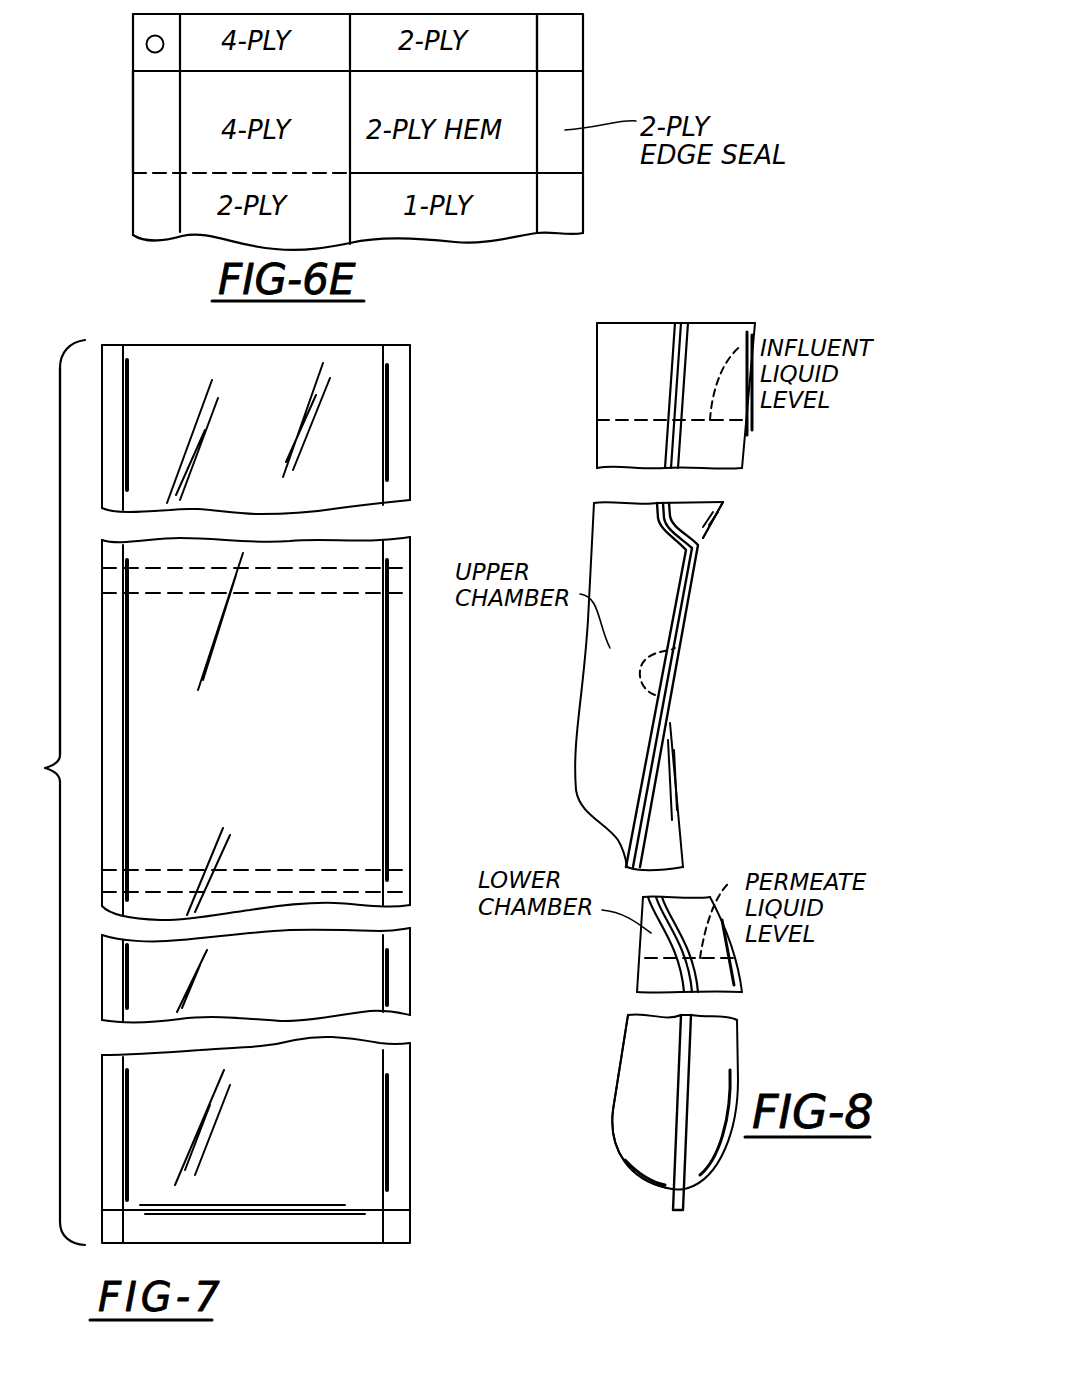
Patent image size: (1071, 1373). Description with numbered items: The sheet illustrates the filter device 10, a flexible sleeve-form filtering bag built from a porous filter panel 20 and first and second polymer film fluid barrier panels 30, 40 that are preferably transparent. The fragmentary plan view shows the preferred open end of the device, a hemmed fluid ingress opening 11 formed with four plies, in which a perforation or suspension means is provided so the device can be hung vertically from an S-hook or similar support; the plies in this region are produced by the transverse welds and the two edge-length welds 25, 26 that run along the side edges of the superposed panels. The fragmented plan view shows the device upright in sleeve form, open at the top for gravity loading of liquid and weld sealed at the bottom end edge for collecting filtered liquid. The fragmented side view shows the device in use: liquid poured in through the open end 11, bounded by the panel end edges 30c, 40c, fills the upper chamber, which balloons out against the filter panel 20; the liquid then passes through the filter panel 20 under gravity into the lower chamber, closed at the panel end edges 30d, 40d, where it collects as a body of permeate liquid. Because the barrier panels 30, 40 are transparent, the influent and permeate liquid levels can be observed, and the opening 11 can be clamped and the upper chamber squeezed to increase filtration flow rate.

In FIG. 7, the filter device 10 is at (432, 560).
In FIG. 8, the filter device 10 is at (713, 736).
In FIG. 7, the fluid ingress opening 11 is at (349, 370).
In FIG. 8, the fluid ingress opening 11 is at (744, 314).
In FIG. 8, the porous filter panel 20 is at (675, 648).
In FIG. 6E, the edge-length weld 25 is at (179, 118).
In FIG. 6E, the edge-length weld 26 is at (537, 57).
In FIG. 8, the first polymer film fluid barrier panel 30 is at (680, 822).
In FIG. 8, the first end edge of first barrier panel 30c is at (684, 322).
In FIG. 8, the second end edge of first barrier panel 30d is at (680, 1210).
In FIG. 7, the second polymer film fluid barrier panel 40 is at (205, 365).
In FIG. 8, the second polymer film fluid barrier panel 40 is at (580, 727).
In FIG. 8, the first end edge of second barrier panel 40c is at (676, 322).
In FIG. 8, the second end edge of second barrier panel 40d is at (672, 1210).